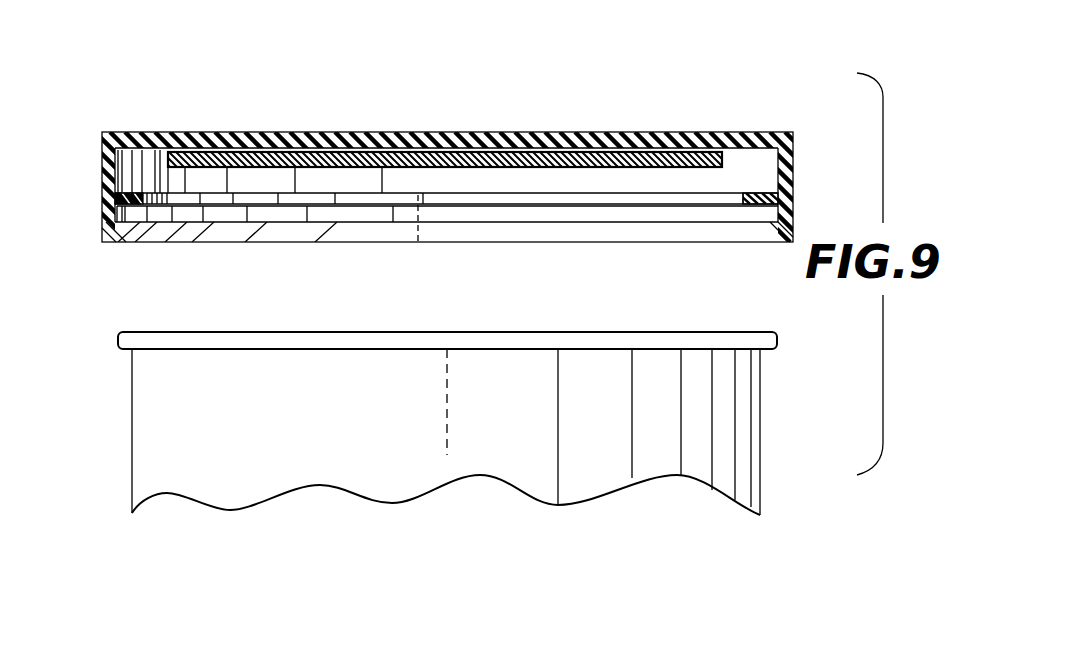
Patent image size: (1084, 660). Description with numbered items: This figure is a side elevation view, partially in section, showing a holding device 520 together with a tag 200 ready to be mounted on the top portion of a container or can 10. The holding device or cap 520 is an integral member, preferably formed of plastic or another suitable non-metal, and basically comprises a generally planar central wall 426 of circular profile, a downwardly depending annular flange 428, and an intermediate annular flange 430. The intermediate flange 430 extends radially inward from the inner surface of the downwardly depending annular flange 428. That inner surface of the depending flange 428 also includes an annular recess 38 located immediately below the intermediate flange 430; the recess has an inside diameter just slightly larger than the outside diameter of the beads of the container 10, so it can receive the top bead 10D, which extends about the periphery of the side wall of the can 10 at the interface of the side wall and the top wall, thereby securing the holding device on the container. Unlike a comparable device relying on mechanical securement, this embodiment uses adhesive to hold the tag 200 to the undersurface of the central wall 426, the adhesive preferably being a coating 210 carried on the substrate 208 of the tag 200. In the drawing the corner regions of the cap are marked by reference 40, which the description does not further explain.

The container or can 10 is at (245, 484).
The top bead 10D is at (188, 340).
The annular recess 38 is at (565, 213).
The corner mounting portion 40 is at (136, 243).
The tag 200 is at (418, 168).
The substrate 208 is at (606, 150).
The coating 210 is at (346, 153).
The generally planar central wall 426 is at (233, 137).
The downwardly depending annular flange 428 is at (102, 180).
The intermediate annular flange 430 is at (138, 193).
The holding device or cap 520 is at (466, 118).